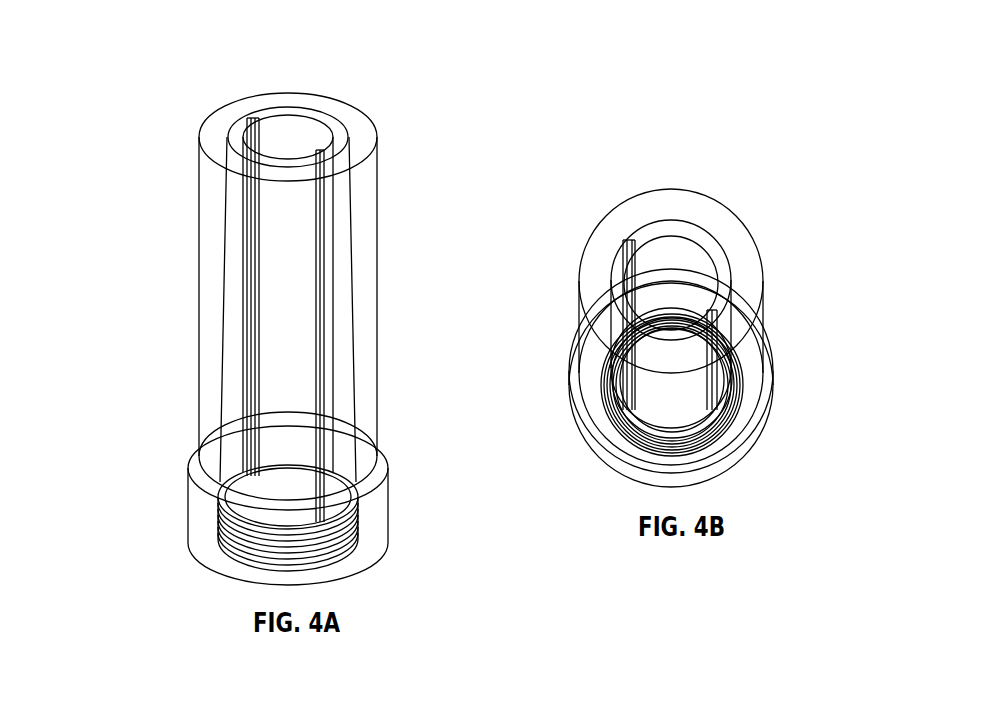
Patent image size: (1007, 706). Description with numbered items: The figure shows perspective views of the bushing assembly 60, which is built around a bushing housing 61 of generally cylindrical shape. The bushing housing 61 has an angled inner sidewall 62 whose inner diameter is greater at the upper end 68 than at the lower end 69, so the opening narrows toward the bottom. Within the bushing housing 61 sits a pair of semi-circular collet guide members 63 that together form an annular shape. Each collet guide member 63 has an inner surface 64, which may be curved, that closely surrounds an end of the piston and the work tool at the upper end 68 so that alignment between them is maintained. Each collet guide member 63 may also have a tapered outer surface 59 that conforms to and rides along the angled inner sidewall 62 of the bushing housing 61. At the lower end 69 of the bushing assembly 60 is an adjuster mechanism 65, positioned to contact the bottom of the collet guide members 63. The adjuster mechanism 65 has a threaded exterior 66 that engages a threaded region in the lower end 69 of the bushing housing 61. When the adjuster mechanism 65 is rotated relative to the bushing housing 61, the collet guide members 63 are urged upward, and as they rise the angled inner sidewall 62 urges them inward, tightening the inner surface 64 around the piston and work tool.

In FIG. 4A, the tapered outer surface 59 is at (354, 344).
In FIG. 4B, the tapered outer surface 59 is at (671, 283).
In FIG. 4A, the bushing assembly 60 is at (103, 40).
In FIG. 4B, the bushing assembly 60 is at (783, 166).
In FIG. 4A, the bushing housing 61 is at (198, 227).
In FIG. 4B, the bushing housing 61 is at (753, 248).
In FIG. 4A, the angled inner sidewall 62 is at (354, 217).
In FIG. 4B, the angled inner sidewall 62 is at (706, 222).
In FIG. 4A, the collet guide member 63 is at (240, 118).
In FIG. 4B, the collet guide member 63 is at (618, 262).
In FIG. 4A, the inner surface 64 is at (294, 129).
In FIG. 4B, the inner surface 64 is at (684, 245).
In FIG. 4A, the adjuster mechanism 65 is at (361, 525).
In FIG. 4B, the adjuster mechanism 65 is at (751, 380).
In FIG. 4A, the threaded exterior 66 is at (218, 521).
In FIG. 4B, the threaded exterior 66 is at (602, 395).
In FIG. 4A, the upper end 68 is at (198, 158).
In FIG. 4B, the upper end 68 is at (743, 223).
In FIG. 4A, the lower end 69 is at (373, 562).
In FIG. 4B, the lower end 69 is at (753, 447).